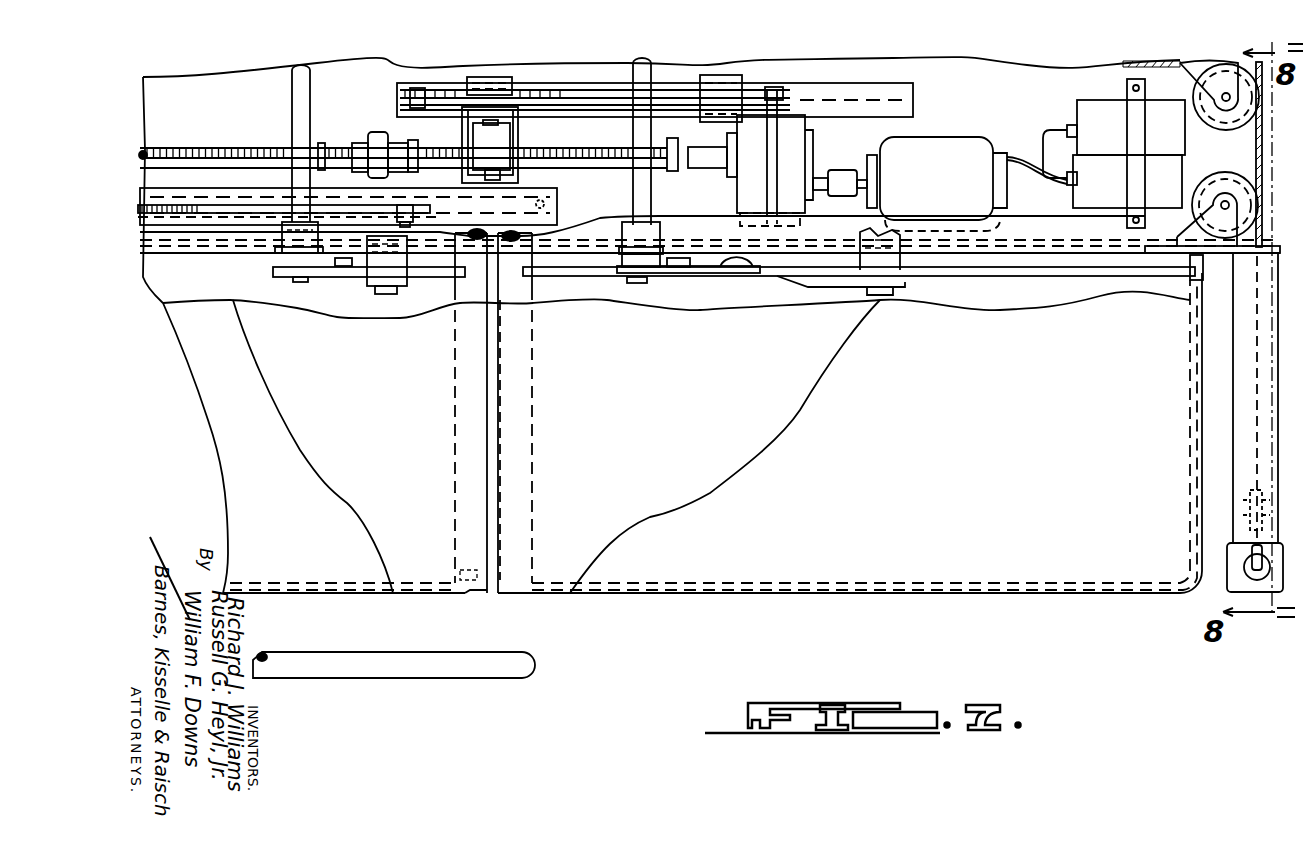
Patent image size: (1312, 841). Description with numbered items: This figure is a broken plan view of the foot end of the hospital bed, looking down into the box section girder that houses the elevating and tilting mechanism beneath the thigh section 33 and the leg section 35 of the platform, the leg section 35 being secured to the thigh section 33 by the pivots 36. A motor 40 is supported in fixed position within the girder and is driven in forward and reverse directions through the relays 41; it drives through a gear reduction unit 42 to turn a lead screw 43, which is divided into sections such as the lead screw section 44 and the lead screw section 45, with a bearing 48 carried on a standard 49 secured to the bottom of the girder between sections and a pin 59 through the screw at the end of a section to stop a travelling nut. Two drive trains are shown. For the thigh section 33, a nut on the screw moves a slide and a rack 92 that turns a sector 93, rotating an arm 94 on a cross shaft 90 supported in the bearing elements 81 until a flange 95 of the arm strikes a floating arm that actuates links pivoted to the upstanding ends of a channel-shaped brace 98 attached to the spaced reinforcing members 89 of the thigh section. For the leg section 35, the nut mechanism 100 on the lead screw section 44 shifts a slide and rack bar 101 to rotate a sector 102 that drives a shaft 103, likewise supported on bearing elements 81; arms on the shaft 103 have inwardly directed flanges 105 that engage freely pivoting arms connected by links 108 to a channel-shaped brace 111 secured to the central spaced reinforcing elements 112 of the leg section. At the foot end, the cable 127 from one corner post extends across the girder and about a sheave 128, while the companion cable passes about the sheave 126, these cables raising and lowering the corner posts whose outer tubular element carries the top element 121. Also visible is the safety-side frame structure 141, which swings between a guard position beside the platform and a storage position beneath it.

The thigh section 33 is at (313, 602).
The leg section 35 is at (720, 594).
The pivots 36 is at (467, 594).
The motor 40 is at (943, 147).
The relays 41 is at (1090, 108).
The gear reduction unit 42 is at (748, 188).
The lead screw 43 is at (602, 149).
The lead screw section 44 is at (583, 167).
The lead screw section 45 is at (202, 152).
The bearing 48 is at (397, 150).
The standard 49 is at (370, 133).
The pin 59 is at (322, 143).
The bearing elements 81 is at (287, 231).
The reinforcing members 89 is at (193, 303).
The cross shaft 90 is at (297, 107).
The rack 92 is at (160, 207).
The sector 93 is at (233, 208).
The arm 94 is at (293, 267).
The flange 95 is at (343, 264).
The channel-shaped brace 98 is at (387, 257).
The nut mechanism 100 is at (492, 143).
The slide and rack bar 101 is at (787, 90).
The sector 102 is at (687, 108).
The shaft 103 is at (651, 67).
The flanges 105 is at (673, 260).
The links 108 is at (833, 295).
The channel-shaped brace 111 is at (898, 258).
The reinforcing elements 112 is at (1045, 278).
The top element 121 is at (1233, 577).
The sheave 126 is at (1213, 121).
The cable 127 is at (1263, 158).
The sheave 128 is at (1247, 163).
The safety-side frame structure 141 is at (550, 666).